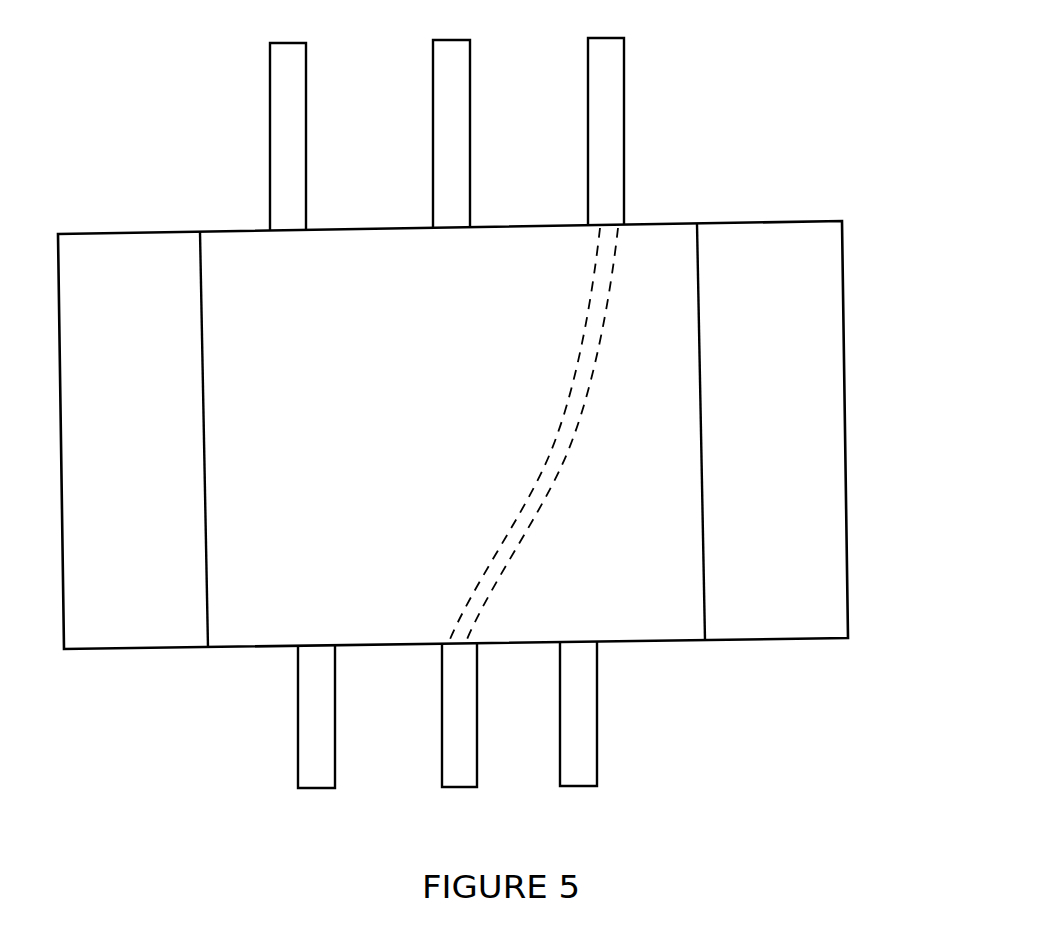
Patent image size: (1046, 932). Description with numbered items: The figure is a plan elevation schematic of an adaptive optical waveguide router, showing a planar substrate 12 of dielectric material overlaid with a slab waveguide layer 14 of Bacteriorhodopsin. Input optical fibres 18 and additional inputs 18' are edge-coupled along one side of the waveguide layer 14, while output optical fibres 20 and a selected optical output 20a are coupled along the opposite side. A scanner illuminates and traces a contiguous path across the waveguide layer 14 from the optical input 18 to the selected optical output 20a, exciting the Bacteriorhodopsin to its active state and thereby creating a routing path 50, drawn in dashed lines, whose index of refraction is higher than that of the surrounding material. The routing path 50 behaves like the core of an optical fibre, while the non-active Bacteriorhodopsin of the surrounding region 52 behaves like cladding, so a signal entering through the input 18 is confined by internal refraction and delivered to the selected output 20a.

The planar substrate 12 is at (845, 422).
The slab waveguide layer 14 is at (700, 316).
The input optical fibre 18 is at (487, 715).
The additional input 18' is at (481, 714).
The output optical fibre 20 is at (287, 43).
The selected optical output 20a is at (606, 38).
The routing path 50 is at (538, 477).
The region 52 is at (244, 413).